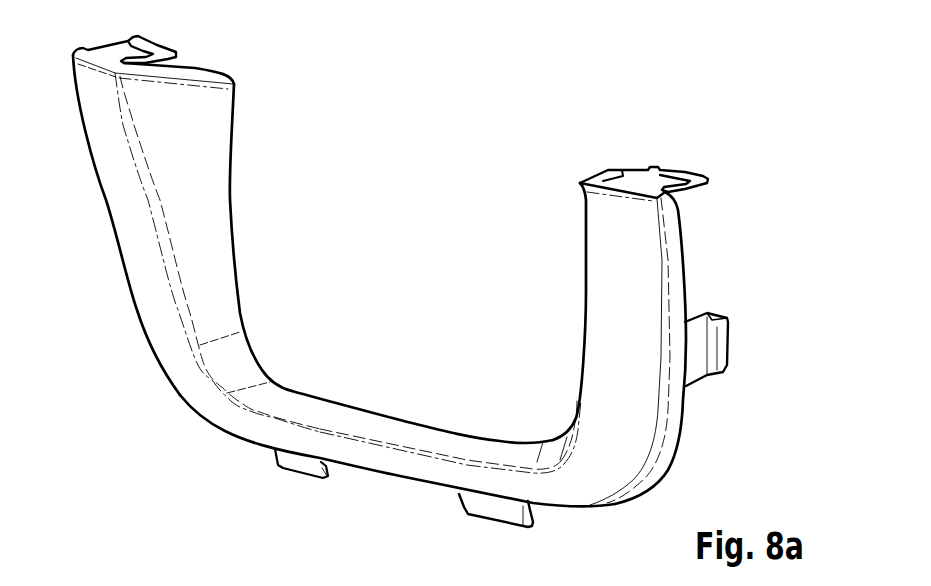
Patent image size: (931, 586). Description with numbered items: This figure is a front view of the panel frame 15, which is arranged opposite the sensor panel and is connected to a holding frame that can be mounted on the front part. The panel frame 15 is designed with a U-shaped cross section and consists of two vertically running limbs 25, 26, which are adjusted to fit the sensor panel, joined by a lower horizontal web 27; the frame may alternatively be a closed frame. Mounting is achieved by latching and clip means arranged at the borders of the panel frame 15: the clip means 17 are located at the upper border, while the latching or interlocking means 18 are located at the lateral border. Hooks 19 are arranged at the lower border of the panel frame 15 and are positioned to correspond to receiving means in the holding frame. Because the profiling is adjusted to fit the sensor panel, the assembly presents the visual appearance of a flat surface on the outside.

The panel frame 15 is at (428, 297).
The clip means 17 is at (660, 180).
The latching or interlocking means 18 is at (722, 343).
The hooks 19 is at (483, 507).
The vertically running limb 25 is at (215, 219).
The vertically running limb 26 is at (602, 284).
The lower horizontal web 27 is at (400, 475).